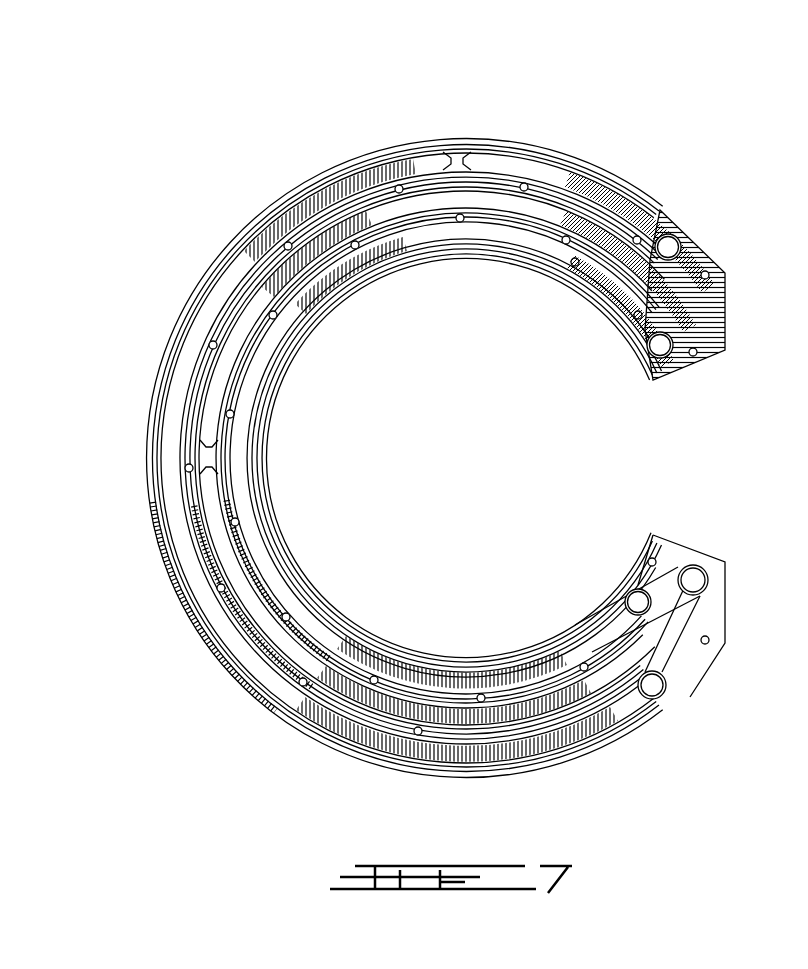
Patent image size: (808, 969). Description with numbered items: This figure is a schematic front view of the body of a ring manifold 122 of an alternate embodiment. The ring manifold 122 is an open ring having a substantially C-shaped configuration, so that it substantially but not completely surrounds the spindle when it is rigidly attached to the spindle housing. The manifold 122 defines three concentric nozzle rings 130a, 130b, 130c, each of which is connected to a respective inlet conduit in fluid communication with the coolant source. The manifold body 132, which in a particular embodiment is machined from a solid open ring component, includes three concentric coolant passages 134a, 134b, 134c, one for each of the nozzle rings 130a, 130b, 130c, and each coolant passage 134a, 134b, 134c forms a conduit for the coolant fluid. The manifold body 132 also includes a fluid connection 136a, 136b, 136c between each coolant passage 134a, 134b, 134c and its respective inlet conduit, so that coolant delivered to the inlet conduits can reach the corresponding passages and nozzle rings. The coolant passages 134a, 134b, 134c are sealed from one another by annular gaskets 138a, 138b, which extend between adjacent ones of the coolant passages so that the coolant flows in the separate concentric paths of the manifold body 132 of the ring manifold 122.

The ring manifold 122 is at (183, 230).
The manifold body 132 is at (270, 193).
The coolant passage 134a is at (387, 253).
The coolant passage 134b is at (377, 217).
The coolant passage 134c is at (495, 165).
The nozzle ring 130a is at (527, 252).
The nozzle ring 130b is at (607, 231).
The nozzle ring 130c is at (603, 185).
The fluid connection 136a is at (633, 598).
The fluid connection 136b is at (695, 578).
The fluid connection 136c is at (654, 688).
The annular gasket 138a is at (465, 695).
The annular gasket 138b is at (497, 733).